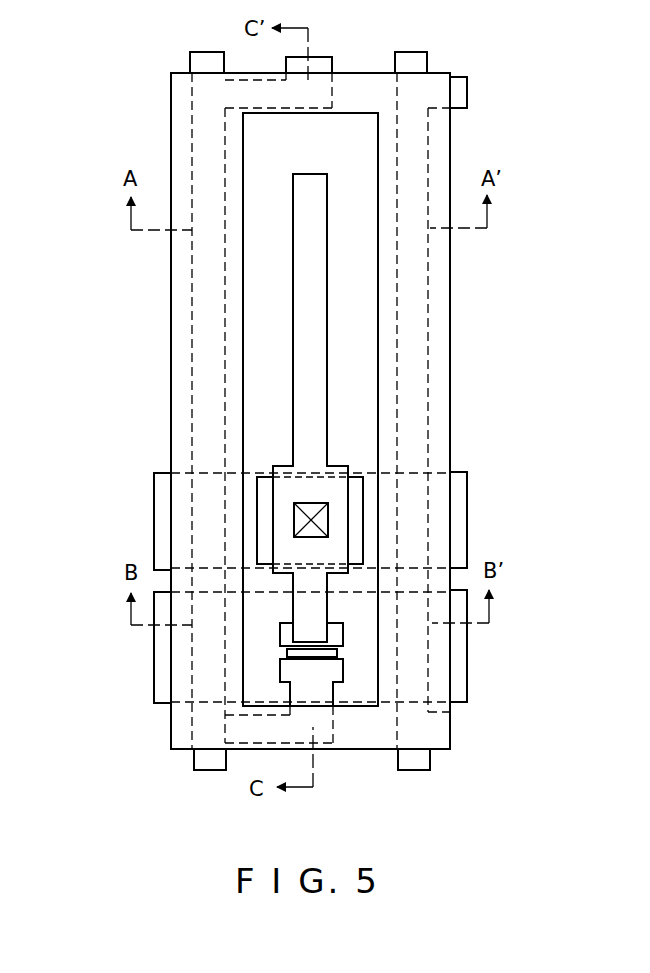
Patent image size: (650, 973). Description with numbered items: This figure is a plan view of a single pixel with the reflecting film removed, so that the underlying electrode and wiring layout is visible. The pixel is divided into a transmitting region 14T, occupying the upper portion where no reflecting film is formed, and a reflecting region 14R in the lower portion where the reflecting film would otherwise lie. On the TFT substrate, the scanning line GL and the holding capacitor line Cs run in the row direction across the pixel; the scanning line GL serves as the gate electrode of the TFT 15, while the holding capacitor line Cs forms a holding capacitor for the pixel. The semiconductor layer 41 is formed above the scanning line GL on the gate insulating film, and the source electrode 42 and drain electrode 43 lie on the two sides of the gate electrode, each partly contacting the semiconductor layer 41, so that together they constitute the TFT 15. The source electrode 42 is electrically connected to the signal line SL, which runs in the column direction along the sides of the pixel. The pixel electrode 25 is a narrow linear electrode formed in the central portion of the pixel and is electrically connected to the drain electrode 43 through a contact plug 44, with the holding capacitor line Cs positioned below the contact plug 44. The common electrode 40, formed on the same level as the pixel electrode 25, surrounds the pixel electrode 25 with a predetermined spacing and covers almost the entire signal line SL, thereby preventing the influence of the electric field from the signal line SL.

The common electrode 40 is at (450, 283).
The pixel electrode 25 is at (316, 357).
The contact plug 44 is at (328, 512).
The drain electrode 43 is at (363, 530).
The semiconductor layer 41 is at (337, 653).
The source electrode 42 is at (343, 670).
The TFT 15 is at (320, 680).
The holding capacitor line Cs is at (460, 483).
The scanning line GL is at (462, 637).
The signal line SL is at (212, 763).
The transmitting region 14T is at (100, 114).
The reflecting region 14R is at (100, 590).